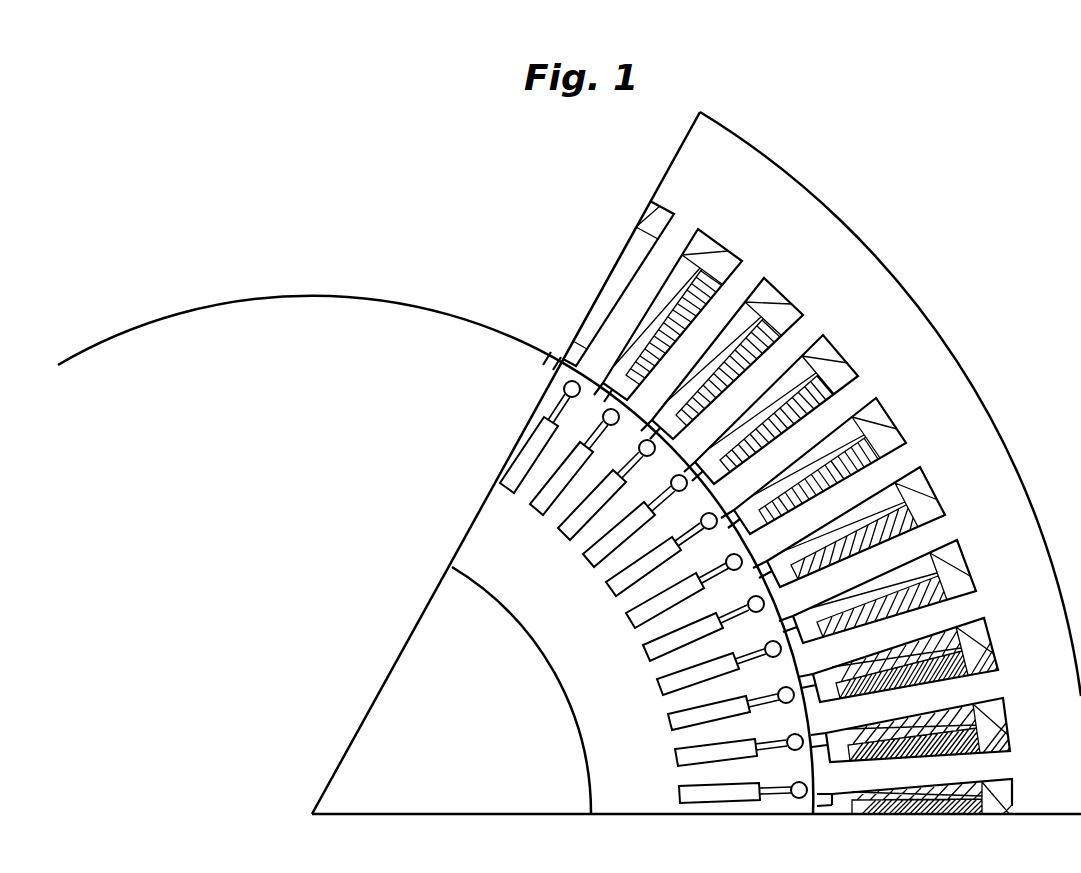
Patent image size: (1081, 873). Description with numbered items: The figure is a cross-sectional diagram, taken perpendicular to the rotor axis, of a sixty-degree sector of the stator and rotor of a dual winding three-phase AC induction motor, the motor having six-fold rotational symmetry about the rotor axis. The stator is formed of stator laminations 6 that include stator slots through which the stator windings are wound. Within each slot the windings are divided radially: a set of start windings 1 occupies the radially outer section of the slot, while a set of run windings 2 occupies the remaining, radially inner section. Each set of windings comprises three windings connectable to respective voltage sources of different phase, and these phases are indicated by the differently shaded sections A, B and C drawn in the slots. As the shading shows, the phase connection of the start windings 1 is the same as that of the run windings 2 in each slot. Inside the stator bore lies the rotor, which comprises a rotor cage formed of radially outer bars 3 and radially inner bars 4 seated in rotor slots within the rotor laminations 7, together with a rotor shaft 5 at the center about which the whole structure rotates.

The start windings 1 is at (655, 210).
The run windings 2 is at (627, 258).
The radially outer bars 3 is at (558, 385).
The radially inner bars 4 is at (530, 456).
The rotor shaft 5 is at (412, 663).
The stator laminations 6 is at (813, 237).
The rotor laminations 7 is at (465, 538).
The phase section A is at (808, 378).
The phase section B is at (925, 582).
The phase section C is at (975, 797).